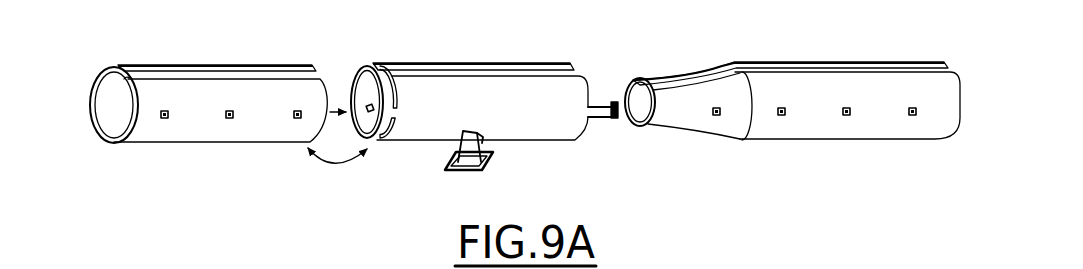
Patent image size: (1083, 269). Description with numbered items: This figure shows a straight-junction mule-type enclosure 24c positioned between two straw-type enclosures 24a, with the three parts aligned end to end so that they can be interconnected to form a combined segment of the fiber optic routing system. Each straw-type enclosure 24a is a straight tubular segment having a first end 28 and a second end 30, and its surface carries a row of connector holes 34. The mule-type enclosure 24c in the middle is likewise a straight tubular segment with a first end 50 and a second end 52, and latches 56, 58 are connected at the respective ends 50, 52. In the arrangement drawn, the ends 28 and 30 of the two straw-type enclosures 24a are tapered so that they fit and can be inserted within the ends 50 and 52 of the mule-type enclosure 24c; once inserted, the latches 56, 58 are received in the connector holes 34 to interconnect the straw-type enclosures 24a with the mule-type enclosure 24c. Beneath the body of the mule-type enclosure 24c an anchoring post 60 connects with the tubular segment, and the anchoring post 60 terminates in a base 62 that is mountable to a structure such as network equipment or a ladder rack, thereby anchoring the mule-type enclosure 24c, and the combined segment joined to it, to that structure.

The straw-type enclosure 24a is at (209, 61).
The straight-junction mule-type enclosure 24c is at (498, 60).
The first end 28 is at (108, 97).
The second end 30 is at (327, 95).
The connector holes 34 is at (300, 119).
The first end 50 is at (368, 90).
The second end 52 is at (590, 88).
The latch 56 is at (376, 104).
The latch 58 is at (612, 100).
The anchoring post 60 is at (488, 141).
The base 62 is at (446, 161).